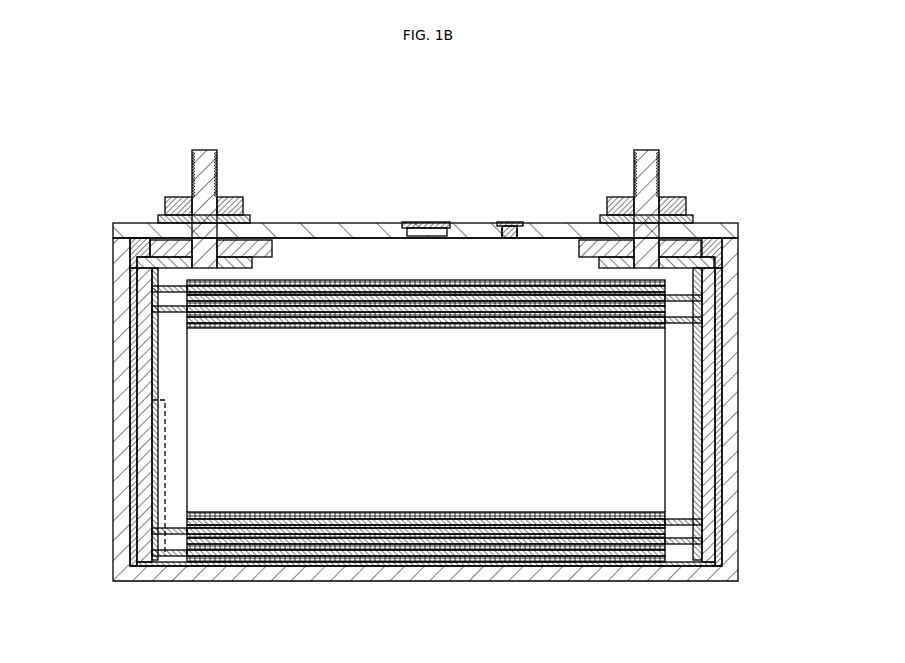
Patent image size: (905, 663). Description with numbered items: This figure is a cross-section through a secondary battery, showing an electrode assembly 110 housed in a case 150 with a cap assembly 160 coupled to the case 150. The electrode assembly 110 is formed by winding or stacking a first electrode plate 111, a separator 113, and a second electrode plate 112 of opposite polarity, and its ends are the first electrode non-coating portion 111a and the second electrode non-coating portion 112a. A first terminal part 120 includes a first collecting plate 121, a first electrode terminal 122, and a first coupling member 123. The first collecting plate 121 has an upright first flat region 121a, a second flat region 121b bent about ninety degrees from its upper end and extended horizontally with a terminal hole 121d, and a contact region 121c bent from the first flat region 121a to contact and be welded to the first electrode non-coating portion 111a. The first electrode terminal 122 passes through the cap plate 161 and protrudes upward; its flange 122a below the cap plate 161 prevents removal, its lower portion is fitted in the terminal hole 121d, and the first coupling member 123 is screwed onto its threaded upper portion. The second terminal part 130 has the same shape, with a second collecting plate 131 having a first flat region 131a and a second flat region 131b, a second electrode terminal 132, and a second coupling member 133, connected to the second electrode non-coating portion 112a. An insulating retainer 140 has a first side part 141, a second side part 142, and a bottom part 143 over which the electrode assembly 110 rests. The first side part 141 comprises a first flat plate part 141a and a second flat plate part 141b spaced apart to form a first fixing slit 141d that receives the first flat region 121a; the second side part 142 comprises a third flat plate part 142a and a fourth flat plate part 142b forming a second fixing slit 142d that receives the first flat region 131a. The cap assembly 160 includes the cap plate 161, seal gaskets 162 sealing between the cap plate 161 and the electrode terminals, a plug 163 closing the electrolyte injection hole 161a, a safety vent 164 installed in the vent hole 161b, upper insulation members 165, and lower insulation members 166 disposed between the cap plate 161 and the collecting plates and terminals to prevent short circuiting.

The electrode assembly 110 is at (426, 458).
The first electrode plate 111 is at (265, 562).
The first electrode non-coating portion 111a is at (165, 563).
The second electrode plate 112 is at (615, 547).
The second electrode non-coating portion 112a is at (687, 565).
The separator 113 is at (517, 545).
The first terminal part 120 is at (189, 181).
The first collecting plate 121 is at (151, 400).
The first flat region 121a is at (155, 325).
The second flat region 121b is at (135, 245).
The contact region 121c is at (152, 403).
The terminal hole 121d is at (152, 289).
The first electrode terminal 122 is at (189, 195).
The flange 122a is at (167, 242).
The first coupling member 123 is at (228, 198).
The second terminal part 130 is at (653, 181).
The second collecting plate 131 is at (691, 401).
The first flat region 131a is at (703, 315).
The second flat region 131b is at (703, 283).
The second electrode terminal 132 is at (638, 150).
The second coupling member 133 is at (676, 198).
The retainer 140 is at (426, 452).
The first side part 141 is at (101, 417).
The first flat plate part 141a is at (152, 520).
The second flat plate part 141b is at (140, 560).
The first fixing slit 141d is at (133, 467).
The second side part 142 is at (754, 417).
The third flat plate part 142a is at (720, 392).
The fourth flat plate part 142b is at (707, 362).
The second fixing slit 142d is at (705, 432).
The bottom part 143 is at (557, 573).
The case 150 is at (738, 552).
The cap assembly 160 is at (453, 219).
The cap plate 161 is at (425, 229).
The electrolyte injection hole 161a is at (512, 237).
The vent hole 161b is at (420, 237).
The seal gasket 162 is at (178, 197).
The plug 163 is at (510, 222).
The safety vent 164 is at (420, 222).
The upper insulation member 165 is at (690, 218).
The lower insulation member 166 is at (252, 240).